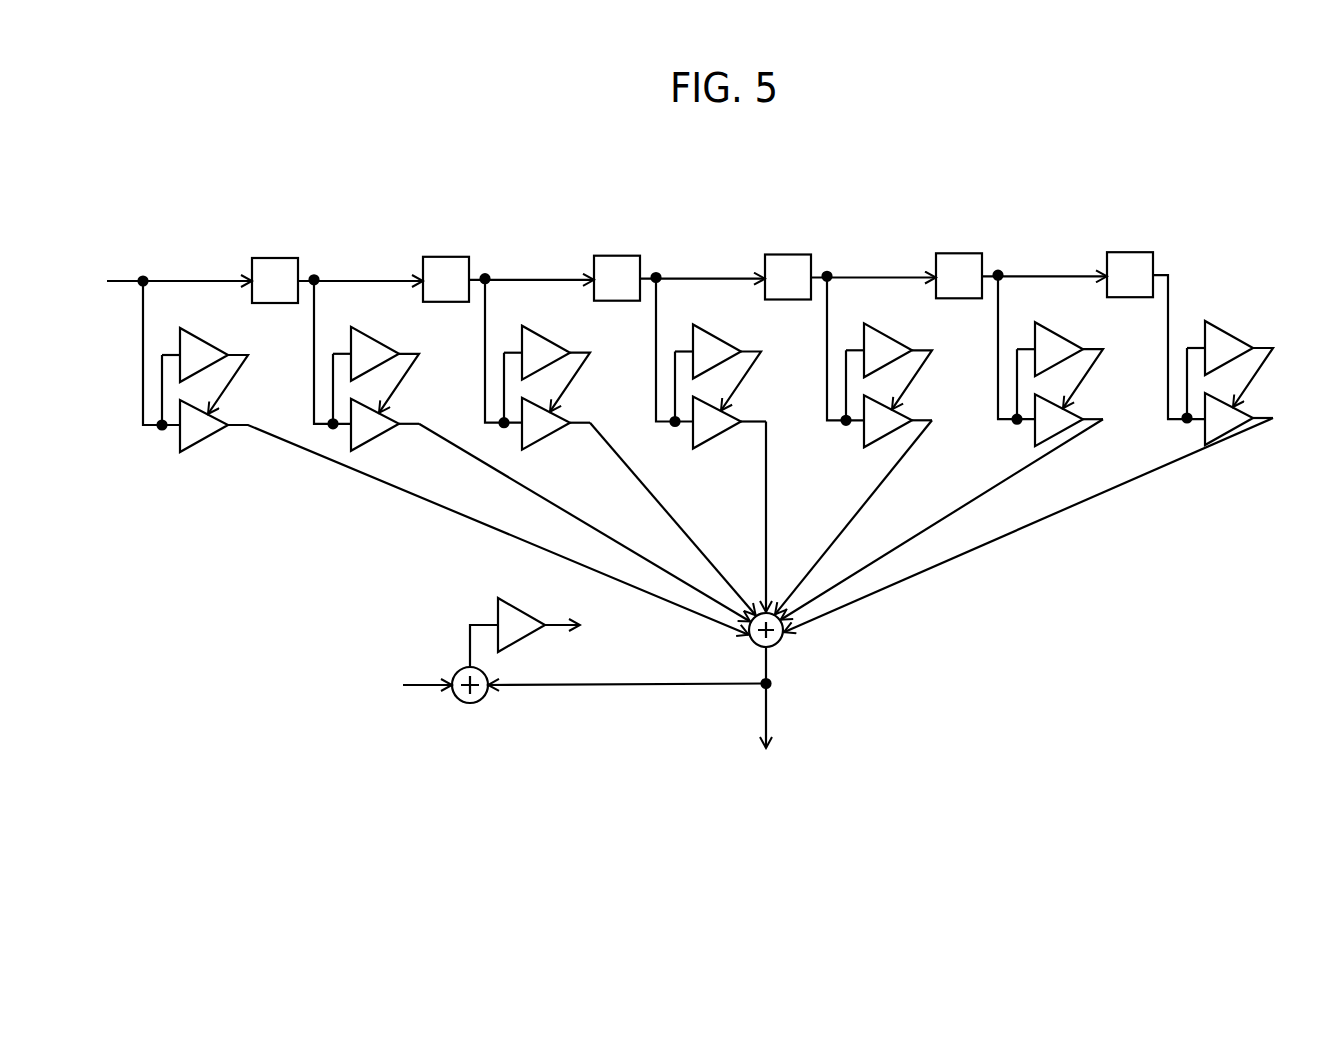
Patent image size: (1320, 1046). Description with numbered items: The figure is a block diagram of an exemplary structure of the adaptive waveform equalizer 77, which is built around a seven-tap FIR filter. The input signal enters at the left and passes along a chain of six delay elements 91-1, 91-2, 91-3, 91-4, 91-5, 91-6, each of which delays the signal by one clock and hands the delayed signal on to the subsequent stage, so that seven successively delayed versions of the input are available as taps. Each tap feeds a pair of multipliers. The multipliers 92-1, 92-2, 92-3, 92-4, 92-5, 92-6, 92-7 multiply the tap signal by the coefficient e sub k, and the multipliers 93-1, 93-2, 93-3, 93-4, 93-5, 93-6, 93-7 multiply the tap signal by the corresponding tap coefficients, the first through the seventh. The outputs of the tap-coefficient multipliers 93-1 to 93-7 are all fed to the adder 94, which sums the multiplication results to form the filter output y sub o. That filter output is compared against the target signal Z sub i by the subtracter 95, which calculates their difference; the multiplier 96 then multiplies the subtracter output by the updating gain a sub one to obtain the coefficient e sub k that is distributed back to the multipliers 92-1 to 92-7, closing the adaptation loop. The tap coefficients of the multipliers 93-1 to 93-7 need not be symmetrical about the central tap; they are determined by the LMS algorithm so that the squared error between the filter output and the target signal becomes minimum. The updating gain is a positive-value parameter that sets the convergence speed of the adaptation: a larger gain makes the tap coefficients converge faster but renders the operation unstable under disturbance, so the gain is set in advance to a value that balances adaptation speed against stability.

The adaptive waveform equalizer 77 is at (916, 758).
The delay element 91-1 is at (276, 257).
The delay element 91-2 is at (447, 257).
The delay element 91-3 is at (618, 257).
The delay element 91-4 is at (789, 257).
The delay element 91-5 is at (960, 257).
The delay element 91-6 is at (1131, 257).
The multiplier 92-1 is at (205, 344).
The multiplier 92-2 is at (376, 344).
The multiplier 92-3 is at (547, 344).
The multiplier 92-4 is at (718, 344).
The multiplier 92-5 is at (889, 344).
The multiplier 92-6 is at (1060, 344).
The multiplier 92-7 is at (1228, 328).
The multiplier 93-1 is at (200, 441).
The multiplier 93-2 is at (378, 440).
The multiplier 93-3 is at (547, 441).
The multiplier 93-4 is at (713, 441).
The multiplier 93-5 is at (865, 437).
The multiplier 93-6 is at (1036, 437).
The multiplier 93-7 is at (1246, 413).
The adder 94 is at (779, 644).
The subtracter 95 is at (470, 703).
The multiplier 96 is at (497, 612).